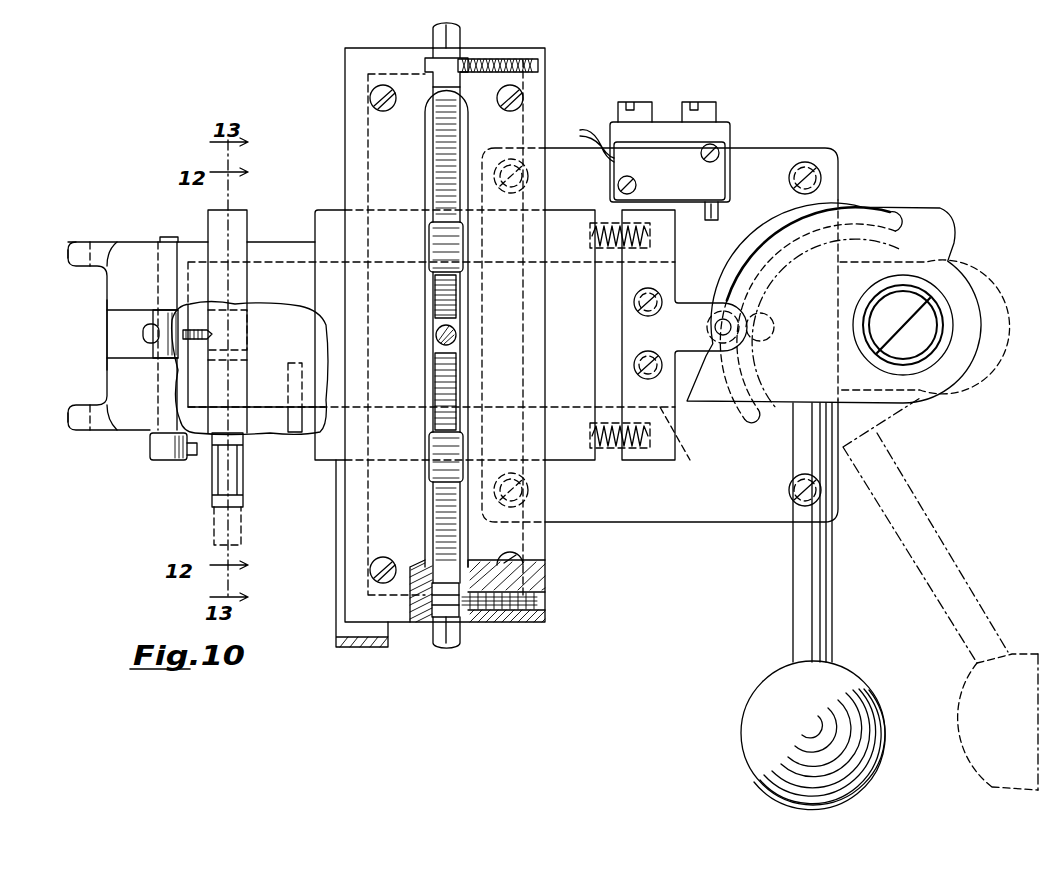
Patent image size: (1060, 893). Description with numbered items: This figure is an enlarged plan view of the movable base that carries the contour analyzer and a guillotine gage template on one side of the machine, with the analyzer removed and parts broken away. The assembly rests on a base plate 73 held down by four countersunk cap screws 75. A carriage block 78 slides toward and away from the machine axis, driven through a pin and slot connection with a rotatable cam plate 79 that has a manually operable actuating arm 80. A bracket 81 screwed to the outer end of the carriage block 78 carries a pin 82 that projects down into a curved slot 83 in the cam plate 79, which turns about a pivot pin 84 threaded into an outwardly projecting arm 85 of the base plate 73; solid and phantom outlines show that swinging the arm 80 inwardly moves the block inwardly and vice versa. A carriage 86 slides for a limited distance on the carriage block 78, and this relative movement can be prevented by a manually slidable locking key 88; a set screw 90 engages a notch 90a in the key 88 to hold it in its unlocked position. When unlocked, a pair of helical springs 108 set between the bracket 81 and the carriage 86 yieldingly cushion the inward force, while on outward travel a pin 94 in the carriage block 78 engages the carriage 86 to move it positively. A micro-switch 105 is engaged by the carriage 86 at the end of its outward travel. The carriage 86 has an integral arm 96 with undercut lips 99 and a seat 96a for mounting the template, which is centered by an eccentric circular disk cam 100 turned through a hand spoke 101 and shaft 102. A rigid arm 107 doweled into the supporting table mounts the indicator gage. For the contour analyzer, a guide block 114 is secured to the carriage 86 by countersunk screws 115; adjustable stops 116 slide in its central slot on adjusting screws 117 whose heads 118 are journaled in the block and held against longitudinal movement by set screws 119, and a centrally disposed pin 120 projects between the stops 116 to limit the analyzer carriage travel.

The base plate 73 is at (672, 522).
The countersunk cap screws 75 is at (512, 160).
The carriage block 78 is at (262, 400).
The cam plate 79 is at (956, 238).
The actuating arm 80 is at (830, 560).
The bracket 81 is at (668, 282).
The pin 82 is at (740, 342).
The curved slot 83 is at (884, 210).
The pivot pin 84 is at (935, 347).
The outwardly projecting arm 85 is at (945, 388).
The carriage 86 is at (315, 250).
The locking key 88 is at (247, 220).
The set screw 90 is at (230, 338).
The notch 90a is at (210, 248).
The pin 94 is at (295, 435).
The arm 96 is at (120, 432).
The seat 96a is at (122, 378).
The undercut lips 99 is at (100, 242).
The circular disk cam 100 is at (143, 334).
The hand spoke 101 is at (192, 456).
The shaft 102 is at (165, 238).
The micro-switch 105 is at (716, 122).
The rigid arm 107 is at (340, 637).
The helical springs 108 is at (603, 222).
The guide block 114 is at (345, 118).
The countersunk screws 115 is at (372, 95).
The adjustable stops 116 is at (429, 240).
The adjusting screws 117 is at (457, 312).
The heads 118 is at (432, 34).
The set screws 119 is at (532, 56).
The pin 120 is at (438, 328).